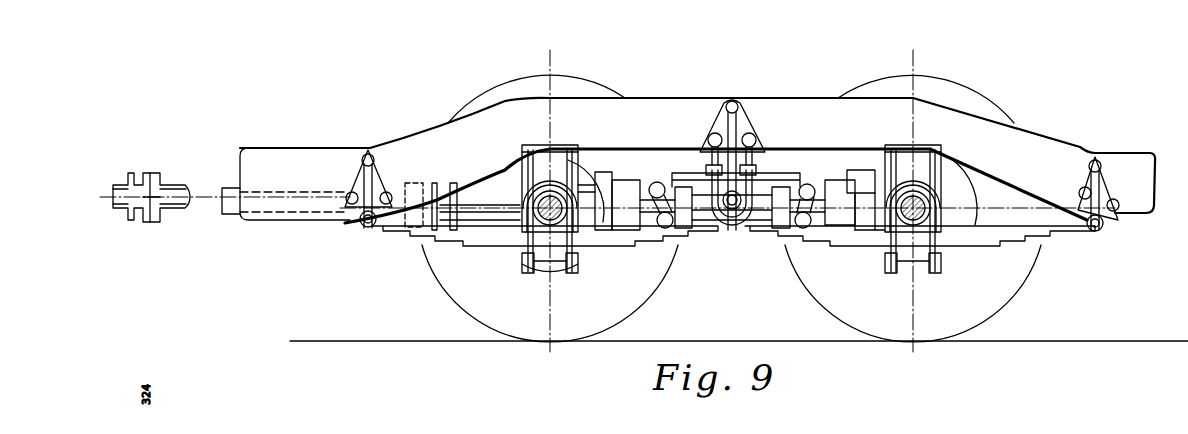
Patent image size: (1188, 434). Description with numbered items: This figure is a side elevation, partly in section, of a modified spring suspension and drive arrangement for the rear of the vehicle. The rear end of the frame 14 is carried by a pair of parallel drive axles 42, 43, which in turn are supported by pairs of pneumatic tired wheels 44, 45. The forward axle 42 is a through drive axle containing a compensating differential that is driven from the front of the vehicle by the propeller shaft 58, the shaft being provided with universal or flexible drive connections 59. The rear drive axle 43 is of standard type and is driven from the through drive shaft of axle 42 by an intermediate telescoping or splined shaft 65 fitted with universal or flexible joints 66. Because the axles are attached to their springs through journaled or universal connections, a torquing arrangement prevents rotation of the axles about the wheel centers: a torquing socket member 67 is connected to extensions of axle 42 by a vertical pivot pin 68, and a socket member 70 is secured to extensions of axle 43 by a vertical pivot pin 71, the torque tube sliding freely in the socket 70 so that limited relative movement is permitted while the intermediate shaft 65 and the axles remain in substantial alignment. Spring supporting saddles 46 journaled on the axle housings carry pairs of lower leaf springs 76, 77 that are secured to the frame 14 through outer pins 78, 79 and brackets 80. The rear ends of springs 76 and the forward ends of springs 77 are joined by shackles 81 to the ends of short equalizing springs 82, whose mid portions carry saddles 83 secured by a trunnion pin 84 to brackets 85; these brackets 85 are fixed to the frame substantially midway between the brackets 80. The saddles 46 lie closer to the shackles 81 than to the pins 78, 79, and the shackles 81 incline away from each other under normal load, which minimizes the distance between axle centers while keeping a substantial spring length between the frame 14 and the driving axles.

The frame 14 is at (662, 98).
The drive axle 42 is at (498, 140).
The rear drive axle 43 is at (1000, 150).
The pneumatic tired wheels 44 is at (446, 290).
The pneumatic tired wheels 45 is at (1015, 303).
The spring supporting saddles 46 is at (568, 148).
The propeller shaft 58 is at (278, 195).
The universal or flexible drive connections 59 is at (160, 176).
The intermediate telescoping or splined shaft 65 is at (716, 222).
The universal or flexible joints 66 is at (684, 235).
The torquing socket member 67 is at (624, 235).
The vertical pivot pin 68 is at (603, 173).
The socket member 70 is at (838, 228).
The vertical pivot pin 71 is at (849, 176).
The lower leaf springs 76 is at (496, 250).
The lower leaf springs 77 is at (975, 250).
The pin 78 is at (360, 230).
The pin 79 is at (1102, 232).
The brackets 80 is at (362, 152).
The shackles 81 is at (652, 182).
The equalizing springs 82 is at (708, 120).
The saddles 83 is at (770, 165).
The trunnion pin 84 is at (734, 212).
The brackets 85 is at (760, 125).